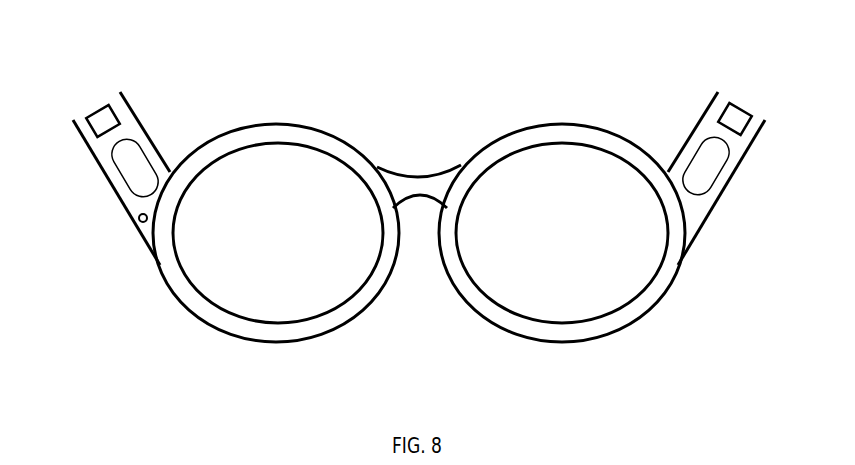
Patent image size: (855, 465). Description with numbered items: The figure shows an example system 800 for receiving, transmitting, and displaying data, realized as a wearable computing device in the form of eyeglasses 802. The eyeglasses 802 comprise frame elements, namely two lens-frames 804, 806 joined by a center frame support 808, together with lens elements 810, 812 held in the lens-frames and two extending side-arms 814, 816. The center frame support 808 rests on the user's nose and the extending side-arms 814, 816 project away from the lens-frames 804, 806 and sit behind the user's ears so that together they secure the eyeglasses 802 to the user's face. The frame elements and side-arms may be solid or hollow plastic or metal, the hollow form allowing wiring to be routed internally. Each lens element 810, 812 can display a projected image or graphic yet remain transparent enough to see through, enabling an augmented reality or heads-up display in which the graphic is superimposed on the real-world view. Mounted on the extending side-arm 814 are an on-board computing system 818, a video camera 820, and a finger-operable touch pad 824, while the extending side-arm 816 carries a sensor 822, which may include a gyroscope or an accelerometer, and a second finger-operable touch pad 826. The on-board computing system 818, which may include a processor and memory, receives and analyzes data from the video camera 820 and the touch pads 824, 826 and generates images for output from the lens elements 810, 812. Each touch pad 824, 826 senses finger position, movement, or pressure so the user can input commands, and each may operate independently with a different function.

The system 800 is at (672, 312).
The eyeglasses 802 is at (507, 81).
The lens-frame 804 is at (247, 125).
The lens-frame 806 is at (540, 124).
The center frame support 808 is at (412, 178).
The lens element 810 is at (220, 287).
The lens element 812 is at (512, 300).
The extending side-arm 814 is at (158, 142).
The extending side-arm 816 is at (692, 137).
The on-board computing system 818 is at (110, 120).
The video camera 820 is at (136, 220).
The sensor 822 is at (738, 118).
The finger-operable touch pad 824 is at (132, 165).
The finger-operable touch pad 826 is at (706, 170).